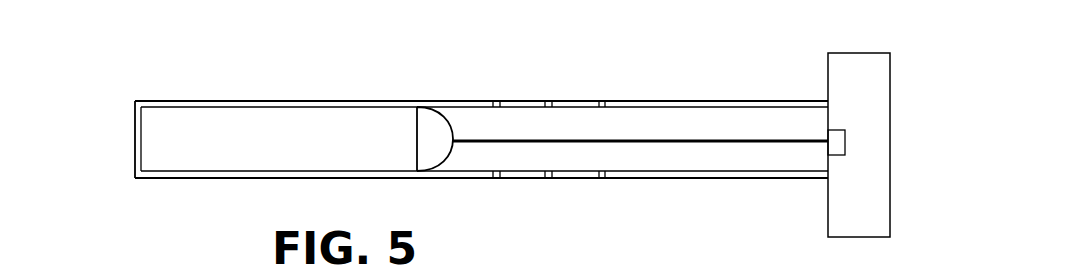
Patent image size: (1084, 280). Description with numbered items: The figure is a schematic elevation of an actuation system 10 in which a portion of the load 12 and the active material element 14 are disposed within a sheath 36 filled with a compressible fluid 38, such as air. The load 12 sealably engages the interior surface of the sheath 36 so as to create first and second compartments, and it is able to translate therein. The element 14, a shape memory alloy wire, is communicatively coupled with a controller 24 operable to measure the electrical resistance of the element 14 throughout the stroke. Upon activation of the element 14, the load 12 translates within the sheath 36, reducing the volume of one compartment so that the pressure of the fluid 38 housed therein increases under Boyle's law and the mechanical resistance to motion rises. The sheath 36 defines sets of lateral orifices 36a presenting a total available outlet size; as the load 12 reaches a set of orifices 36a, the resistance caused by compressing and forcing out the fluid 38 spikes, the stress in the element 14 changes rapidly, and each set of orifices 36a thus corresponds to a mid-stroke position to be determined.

The actuation system 10 is at (146, 38).
The load 12 is at (441, 117).
The active material element 14 is at (730, 140).
The controller 24 is at (845, 143).
The sheath 36 is at (322, 100).
The lateral orifices 36a is at (600, 100).
The compressible fluid 38 is at (208, 142).